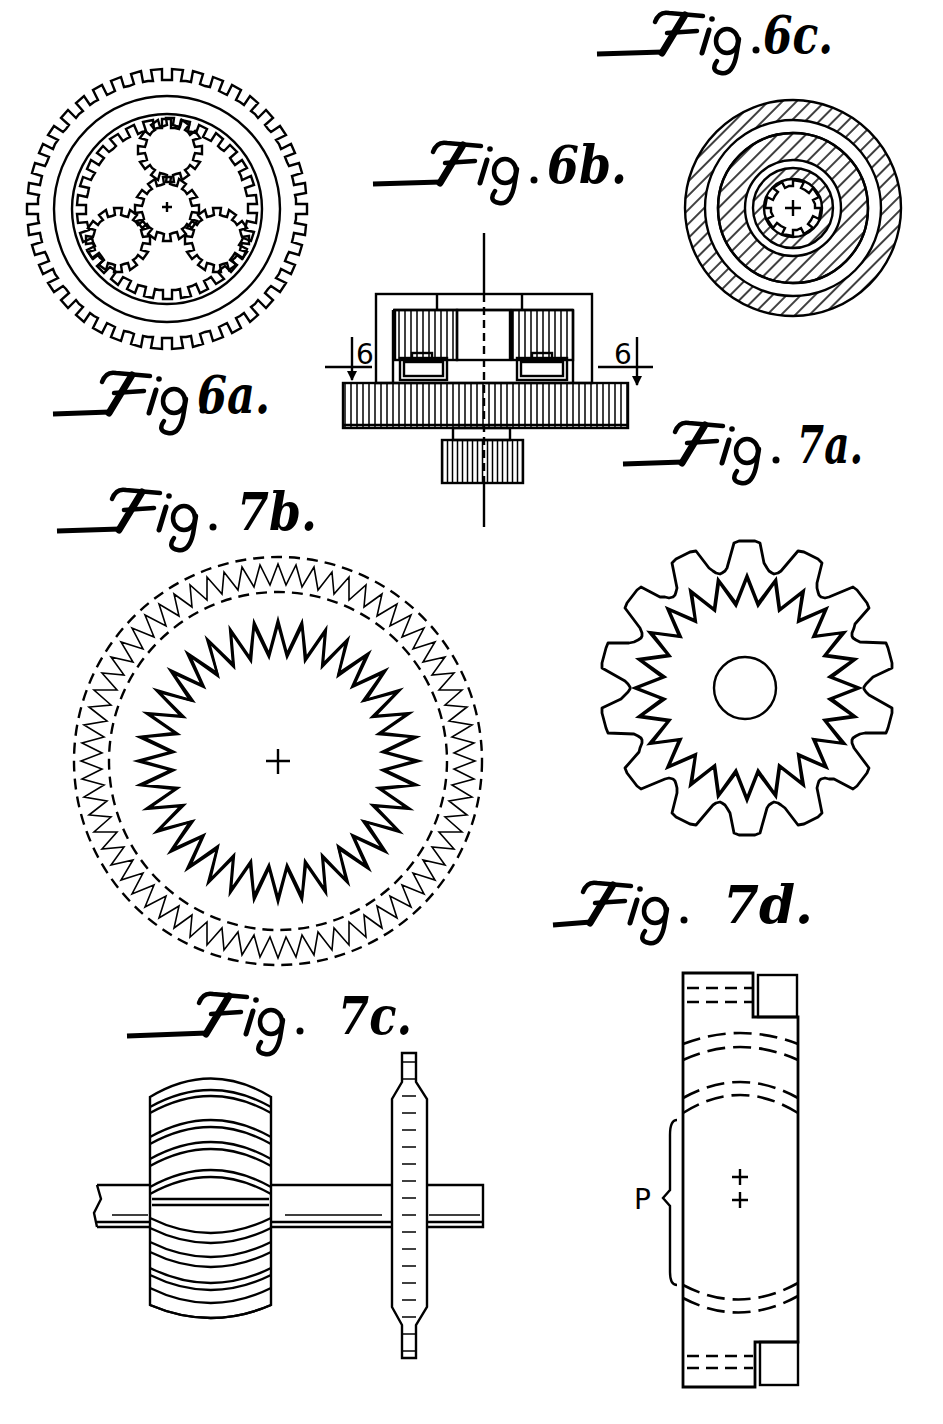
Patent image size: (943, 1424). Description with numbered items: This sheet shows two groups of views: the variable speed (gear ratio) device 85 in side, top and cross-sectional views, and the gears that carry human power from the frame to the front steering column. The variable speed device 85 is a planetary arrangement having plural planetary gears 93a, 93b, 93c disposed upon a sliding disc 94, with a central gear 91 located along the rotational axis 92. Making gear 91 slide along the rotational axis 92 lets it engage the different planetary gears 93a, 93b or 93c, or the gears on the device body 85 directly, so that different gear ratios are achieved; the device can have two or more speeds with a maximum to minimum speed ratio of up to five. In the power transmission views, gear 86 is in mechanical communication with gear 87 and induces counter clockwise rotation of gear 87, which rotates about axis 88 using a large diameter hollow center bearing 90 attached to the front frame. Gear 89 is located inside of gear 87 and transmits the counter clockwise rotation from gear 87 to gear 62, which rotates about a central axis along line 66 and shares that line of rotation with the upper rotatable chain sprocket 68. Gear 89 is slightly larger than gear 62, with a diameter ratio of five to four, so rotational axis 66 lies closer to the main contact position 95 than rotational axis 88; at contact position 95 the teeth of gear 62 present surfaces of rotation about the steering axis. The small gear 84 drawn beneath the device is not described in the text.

In FIG. 7A, the gear 62 is at (752, 650).
In FIG. 7C, the gear 62 is at (265, 1155).
In FIG. 7A, the rotational axis of gear 62 66 is at (766, 708).
In FIG. 7C, the rotational axis of gear 62 66 is at (121, 1205).
In FIG. 7D, the rotational axis of gear 62 66 is at (740, 1200).
In FIG. 7A, the upper rotatable chain sprocket 68 is at (643, 612).
In FIG. 7C, the upper rotatable chain sprocket 68 is at (414, 1114).
In FIG. 6B, the drive gear 84 is at (557, 452).
In FIG. 6A, the variable speed (gear ratio) device 85 is at (90, 150).
In FIG. 6B, the variable speed (gear ratio) device 85 is at (592, 328).
In FIG. 6C, the variable speed (gear ratio) device 85 is at (767, 233).
In FIG. 6A, the gear 86 is at (188, 209).
In FIG. 6B, the gear 86 is at (625, 417).
In FIG. 7B, the gear 87 is at (404, 604).
In FIG. 7D, the gear 87 is at (703, 965).
In FIG. 7B, the rotational axis of gear 87 88 is at (274, 770).
In FIG. 7D, the rotational axis of gear 87 88 is at (738, 1177).
In FIG. 7B, the gear 89 is at (377, 717).
In FIG. 7D, the gear 89 is at (682, 1052).
In FIG. 7D, the large diameter hollow center bearing 90 is at (783, 1000).
In FIG. 6A, the gear 91 is at (182, 235).
In FIG. 6B, the gear 91 is at (468, 337).
In FIG. 6C, the gear 91 is at (726, 219).
In FIG. 6A, the rotational axis 92 is at (170, 205).
In FIG. 6B, the rotational axis 92 is at (484, 263).
In FIG. 6C, the rotational axis 92 is at (790, 208).
In FIG. 6A, the planetary gear 93a is at (177, 150).
In FIG. 6A, the planetary gear 93b is at (110, 250).
In FIG. 6B, the planetary gear 93b is at (407, 333).
In FIG. 6A, the planetary gear 93c is at (223, 253).
In FIG. 6B, the planetary gear 93c is at (567, 332).
In FIG. 6C, the sliding disc 94 is at (802, 272).
In FIG. 7B, the main contact position 95 is at (389, 766).
In FIG. 7A, the main contact position 95 is at (633, 689).
In FIG. 7C, the main contact position 95 is at (263, 1319).
In FIG. 7D, the main contact position 95 is at (757, 1295).